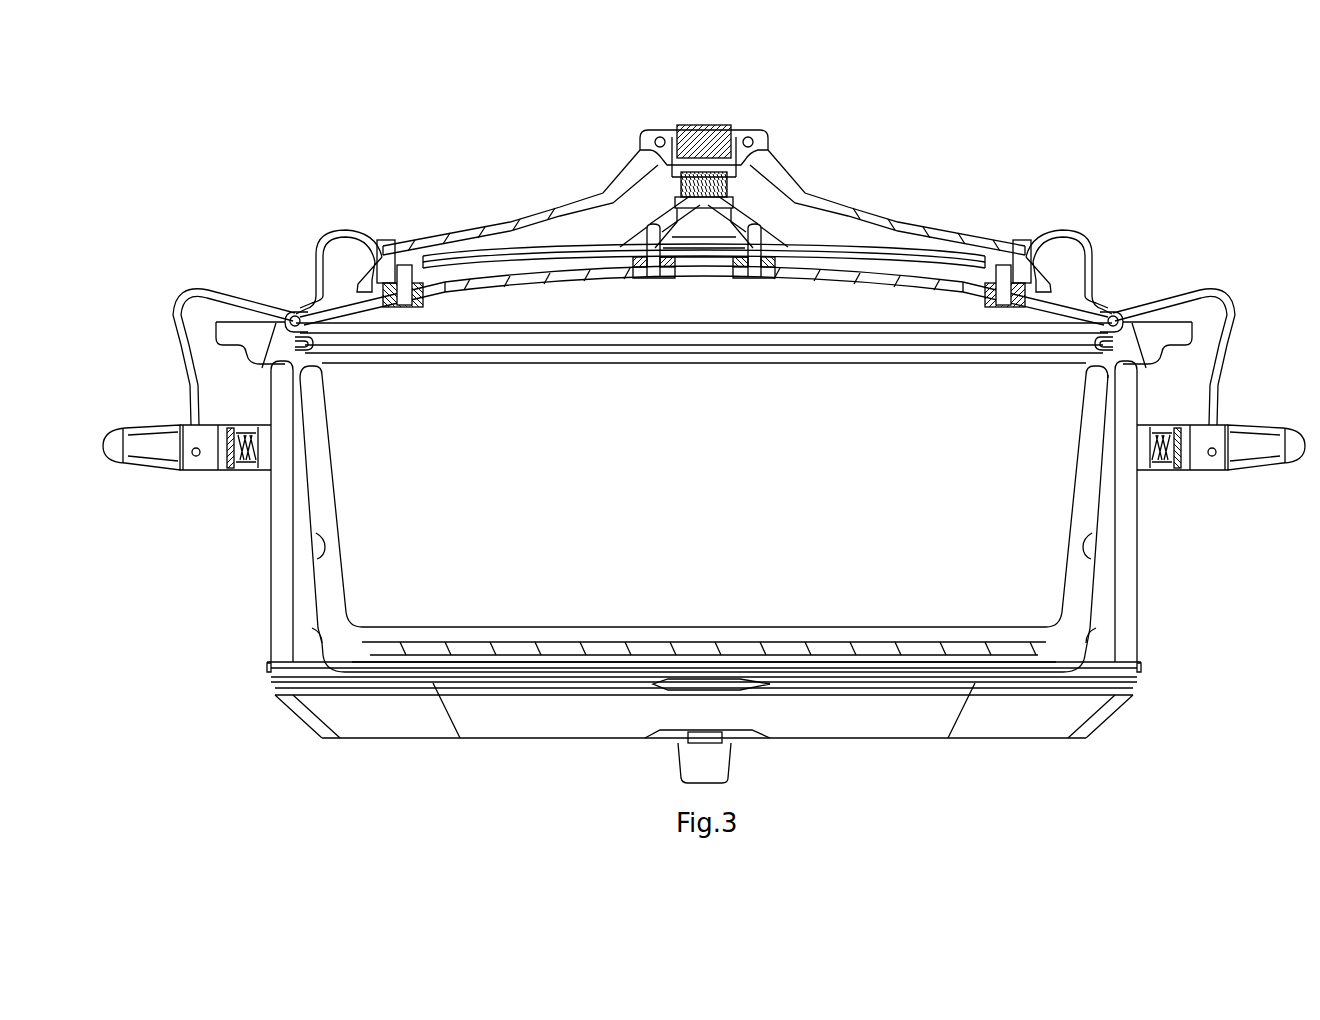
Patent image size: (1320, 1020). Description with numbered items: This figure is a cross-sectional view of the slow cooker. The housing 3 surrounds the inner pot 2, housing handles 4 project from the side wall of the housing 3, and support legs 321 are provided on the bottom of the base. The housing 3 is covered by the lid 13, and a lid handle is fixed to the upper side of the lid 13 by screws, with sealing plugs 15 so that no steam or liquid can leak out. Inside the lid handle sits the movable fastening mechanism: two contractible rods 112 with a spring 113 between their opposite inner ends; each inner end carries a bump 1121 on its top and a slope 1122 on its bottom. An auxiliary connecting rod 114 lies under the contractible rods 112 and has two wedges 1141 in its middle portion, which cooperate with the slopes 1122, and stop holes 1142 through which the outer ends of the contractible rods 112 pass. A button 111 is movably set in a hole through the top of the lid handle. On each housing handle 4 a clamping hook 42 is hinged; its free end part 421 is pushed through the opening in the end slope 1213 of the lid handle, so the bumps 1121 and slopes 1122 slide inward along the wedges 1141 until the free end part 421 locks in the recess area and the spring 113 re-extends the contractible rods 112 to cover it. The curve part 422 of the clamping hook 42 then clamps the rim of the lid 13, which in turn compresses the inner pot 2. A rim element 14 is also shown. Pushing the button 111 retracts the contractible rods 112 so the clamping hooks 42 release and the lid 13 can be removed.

The button 111 is at (702, 122).
The bump 1121 is at (722, 160).
The spring 113 is at (715, 188).
The slope 1122 is at (748, 215).
The wedge 1141 is at (672, 233).
The stop hole 1142 is at (1003, 248).
The contractible rod 112 is at (857, 228).
The auxiliary connecting rod 114 is at (920, 258).
The lid 13 is at (505, 278).
The sealing plug 15 is at (635, 258).
The end slope 1213 is at (363, 265).
The clamping hook 42 is at (1088, 272).
The free end part 421 is at (1017, 273).
The curve part 422 is at (1105, 308).
The rim ring 14 is at (1105, 335).
The housing handle 4 is at (1200, 478).
The housing 3 is at (262, 588).
The inner pot 2 is at (1062, 617).
The support leg 321 is at (722, 770).